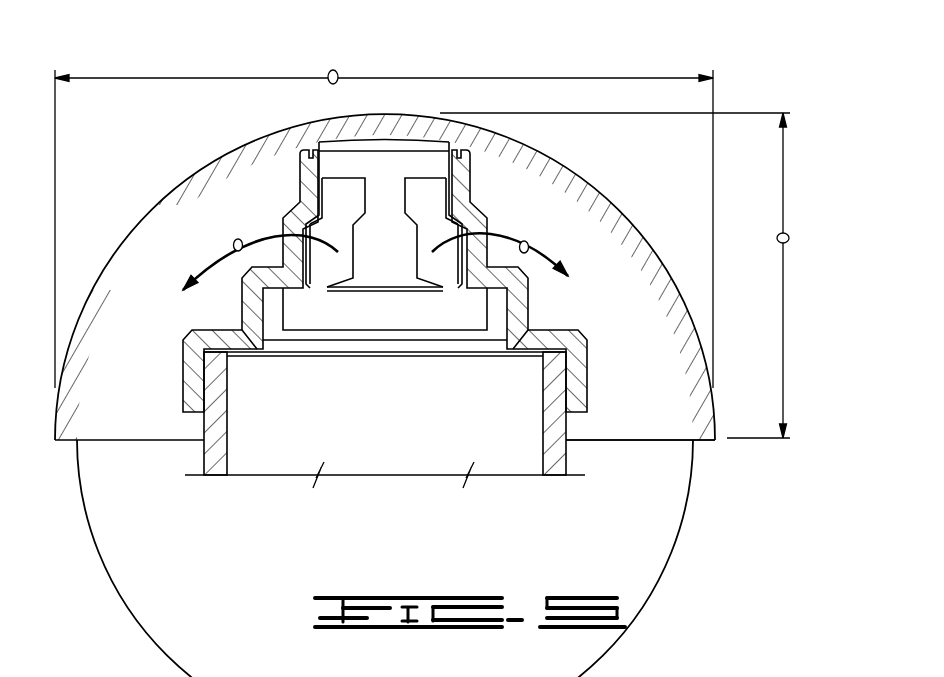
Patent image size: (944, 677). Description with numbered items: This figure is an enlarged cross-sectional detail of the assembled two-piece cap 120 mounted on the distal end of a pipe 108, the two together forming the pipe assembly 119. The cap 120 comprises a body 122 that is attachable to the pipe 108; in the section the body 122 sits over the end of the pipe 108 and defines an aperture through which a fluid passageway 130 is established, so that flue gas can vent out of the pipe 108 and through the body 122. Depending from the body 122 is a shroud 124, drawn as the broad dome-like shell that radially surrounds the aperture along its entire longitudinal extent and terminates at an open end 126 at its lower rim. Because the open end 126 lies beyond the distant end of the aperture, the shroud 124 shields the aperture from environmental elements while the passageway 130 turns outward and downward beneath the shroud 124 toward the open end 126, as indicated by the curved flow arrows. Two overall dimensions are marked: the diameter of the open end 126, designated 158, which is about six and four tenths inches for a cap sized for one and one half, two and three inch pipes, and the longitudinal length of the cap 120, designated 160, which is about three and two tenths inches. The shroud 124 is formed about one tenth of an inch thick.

The pipe 108 is at (204, 458).
The pipe assembly 119 is at (614, 412).
The cap 120 is at (385, 390).
The body 122 is at (487, 216).
The shroud 124 is at (597, 193).
The open end 126 is at (585, 441).
The fluid passageway 130 is at (234, 242).
The open end diameter 158 is at (337, 71).
The longitudinal length 160 is at (789, 238).